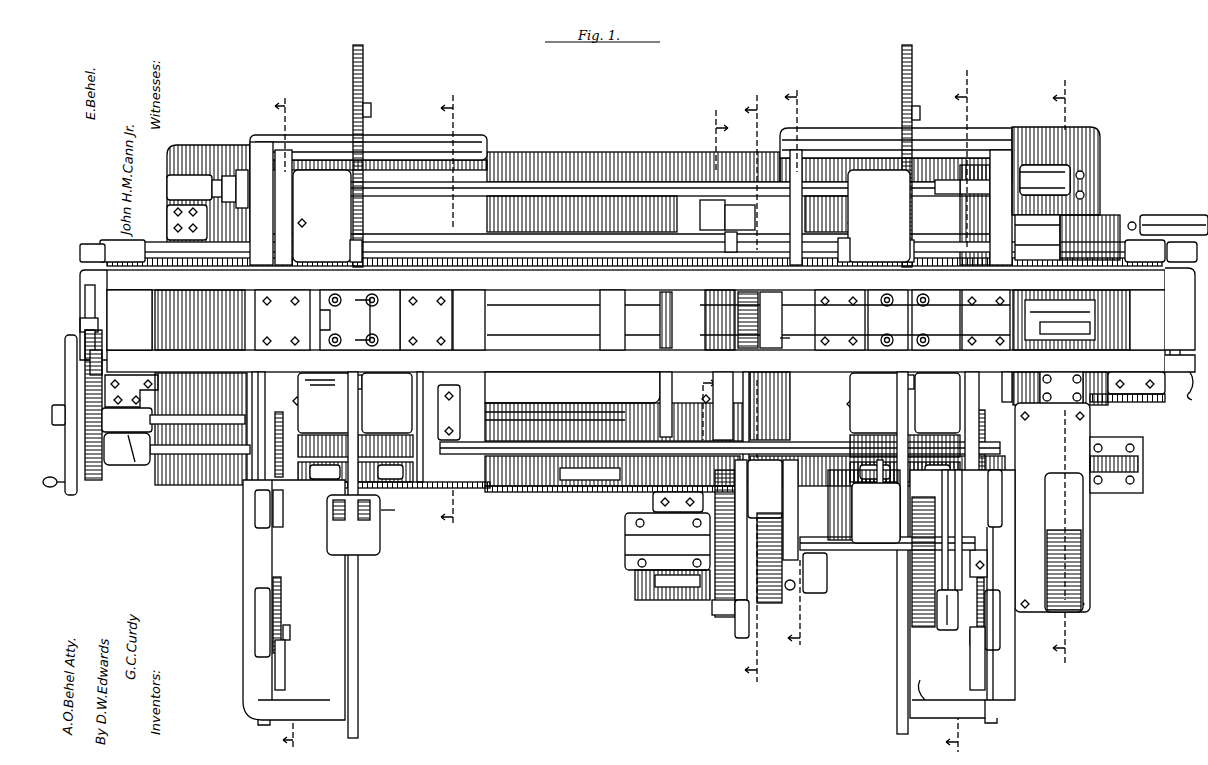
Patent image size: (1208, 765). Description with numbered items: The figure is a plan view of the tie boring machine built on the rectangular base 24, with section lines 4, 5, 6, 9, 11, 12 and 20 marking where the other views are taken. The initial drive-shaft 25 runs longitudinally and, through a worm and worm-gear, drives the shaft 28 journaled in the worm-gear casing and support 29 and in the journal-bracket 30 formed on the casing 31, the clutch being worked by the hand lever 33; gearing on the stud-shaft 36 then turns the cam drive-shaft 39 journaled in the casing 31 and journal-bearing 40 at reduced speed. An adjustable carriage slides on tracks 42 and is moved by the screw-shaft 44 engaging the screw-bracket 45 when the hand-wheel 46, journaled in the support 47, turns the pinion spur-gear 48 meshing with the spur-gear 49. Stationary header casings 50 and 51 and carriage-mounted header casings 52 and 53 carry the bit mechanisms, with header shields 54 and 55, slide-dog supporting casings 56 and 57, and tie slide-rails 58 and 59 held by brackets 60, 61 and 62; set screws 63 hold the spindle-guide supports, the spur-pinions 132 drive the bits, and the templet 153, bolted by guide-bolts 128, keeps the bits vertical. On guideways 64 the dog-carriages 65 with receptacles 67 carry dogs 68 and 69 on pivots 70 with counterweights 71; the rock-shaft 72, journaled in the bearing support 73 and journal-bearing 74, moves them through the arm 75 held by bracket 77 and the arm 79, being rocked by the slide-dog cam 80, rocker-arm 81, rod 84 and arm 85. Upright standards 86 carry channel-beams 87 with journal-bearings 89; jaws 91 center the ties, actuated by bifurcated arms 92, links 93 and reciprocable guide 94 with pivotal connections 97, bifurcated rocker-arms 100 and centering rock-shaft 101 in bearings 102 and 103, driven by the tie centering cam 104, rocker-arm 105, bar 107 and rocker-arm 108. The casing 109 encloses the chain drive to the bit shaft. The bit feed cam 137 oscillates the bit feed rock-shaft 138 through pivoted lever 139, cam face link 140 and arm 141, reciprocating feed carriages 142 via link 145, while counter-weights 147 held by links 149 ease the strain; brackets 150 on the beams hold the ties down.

The section line 4— 4 is at (1067, 372).
The section line 5— 5 is at (965, 411).
The section line 6— 6 is at (455, 310).
The section line 9— 9 is at (760, 388).
The section line 11 is at (298, 423).
The section line 12— 12 is at (807, 367).
The section line 20— 20 is at (703, 275).
The rectangular base 24 is at (586, 488).
The initial drive-shaft 25 is at (1175, 220).
The shaft 28 is at (1064, 352).
The worm-gear casing and support 29 is at (1062, 210).
The journal-bracket 30 is at (1095, 398).
The casing 31 is at (1090, 505).
The hand lever 33 is at (1184, 394).
The stud-shaft 36 is at (1143, 460).
The cam drive-shaft 39 is at (848, 552).
The journal-bearing 40 is at (667, 546).
The tracks 42 is at (590, 180).
The screw-shaft 44 is at (552, 416).
The screw-bracket 45 is at (449, 412).
The hand-wheel 46 is at (54, 489).
The support 47 is at (138, 465).
The pinion spur-gear 48 is at (70, 400).
The spur-gear 49 is at (100, 462).
The stationary header casing 50 is at (905, 427).
The stationary header casing 51 is at (879, 216).
The header casing 52 is at (385, 430).
The header casing 53 is at (344, 216).
The header shield 54 is at (855, 138).
The header shield 55 is at (428, 140).
The tie slide-dog supporting casing 56 is at (1001, 207).
The tie slide-dog supporting casing 57 is at (261, 203).
The tie slide-rail 58 is at (897, 652).
The tie slide-rail 59 is at (358, 632).
The bracket 60 is at (629, 597).
The bracket 61 is at (370, 110).
The bracket 62 is at (629, 403).
The set screws 63 is at (306, 223).
The guideway 64 is at (266, 400).
The dog-carriage 65 is at (275, 548).
The receptacle 67 is at (258, 505).
The dog 68 is at (276, 426).
The dog 69 is at (281, 603).
The pivot 70 is at (291, 630).
The counterweight 71 is at (285, 658).
The rock-shaft 72 is at (650, 182).
The bearing support 73 is at (172, 178).
The journal-bearing 74 is at (1032, 183).
The arm 75 is at (292, 200).
The bracket 77 is at (230, 186).
The arm 79 is at (975, 205).
The slide-dog cam 80 is at (760, 603).
The rocker-arm 81 is at (805, 595).
The rod 84 is at (760, 320).
The arm 85 is at (788, 195).
The upright standard 86 is at (636, 320).
The channel-beam 87 is at (636, 321).
The journal-bearing 89 is at (936, 320).
The jaw 91 is at (362, 254).
The bifurcated arm 92 is at (88, 276).
The link 93 is at (75, 334).
The reciprocable guide 94 is at (98, 325).
The pivotal connection 97 is at (88, 360).
The bifurcated rocker-arm 100 is at (90, 244).
The centering rock-shaft 101 is at (468, 246).
The bearing 102 is at (1145, 250).
The bearing 103 is at (850, 244).
The tie centering cam 104 is at (712, 612).
The rocker-arm 105 is at (742, 636).
The bar 107 is at (770, 345).
The rocker-arm 108 is at (728, 242).
The casing 109 is at (718, 218).
The guide-bolts 128 is at (614, 320).
The spur-pinion 132 is at (1071, 320).
The bit feed cam 137 is at (912, 614).
The bit feed rock-shaft 138 is at (635, 462).
The pivoted lever 139 is at (945, 630).
The cam face link 140 is at (940, 524).
The arm 141 is at (942, 470).
The feed carriage 142 is at (601, 383).
The link 145 is at (864, 500).
The counter-weight 147 is at (380, 540).
The link 149 is at (399, 504).
The bracket 150 is at (632, 320).
The templet 153 is at (748, 320).